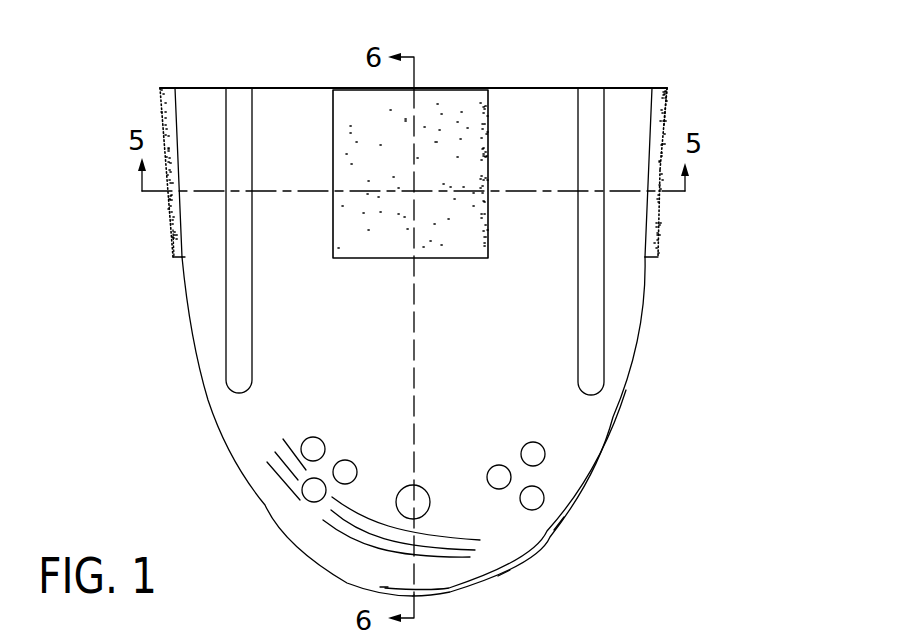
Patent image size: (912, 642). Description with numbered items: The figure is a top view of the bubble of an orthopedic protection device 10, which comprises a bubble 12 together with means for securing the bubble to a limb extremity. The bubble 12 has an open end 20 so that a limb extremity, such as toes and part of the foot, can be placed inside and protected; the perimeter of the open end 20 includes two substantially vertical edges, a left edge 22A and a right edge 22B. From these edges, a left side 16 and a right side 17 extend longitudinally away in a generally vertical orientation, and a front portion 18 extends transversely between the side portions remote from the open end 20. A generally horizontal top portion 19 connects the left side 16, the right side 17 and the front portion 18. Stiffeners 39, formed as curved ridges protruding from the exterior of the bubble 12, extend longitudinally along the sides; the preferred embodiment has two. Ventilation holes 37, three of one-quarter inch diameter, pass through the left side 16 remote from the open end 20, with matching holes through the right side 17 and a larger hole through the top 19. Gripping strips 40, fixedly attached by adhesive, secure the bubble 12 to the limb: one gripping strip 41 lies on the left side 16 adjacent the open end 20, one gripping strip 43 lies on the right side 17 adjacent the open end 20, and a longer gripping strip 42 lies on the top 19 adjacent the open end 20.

The orthopedic protection device 10 is at (541, 79).
The bubble 12 is at (624, 106).
The left side 16 is at (233, 422).
The right side 17 is at (622, 295).
The front portion 18 is at (483, 558).
The top portion 19 is at (430, 357).
The open end 20 is at (213, 87).
The left edge 22A is at (167, 87).
The right edge 22B is at (657, 87).
The ventilation holes 37 is at (535, 497).
The stiffeners 39 is at (592, 385).
The bubble gripping strips 40 is at (667, 122).
The gripping strip 41 is at (172, 232).
The gripping strip 42 is at (453, 100).
The gripping strip 43 is at (667, 222).